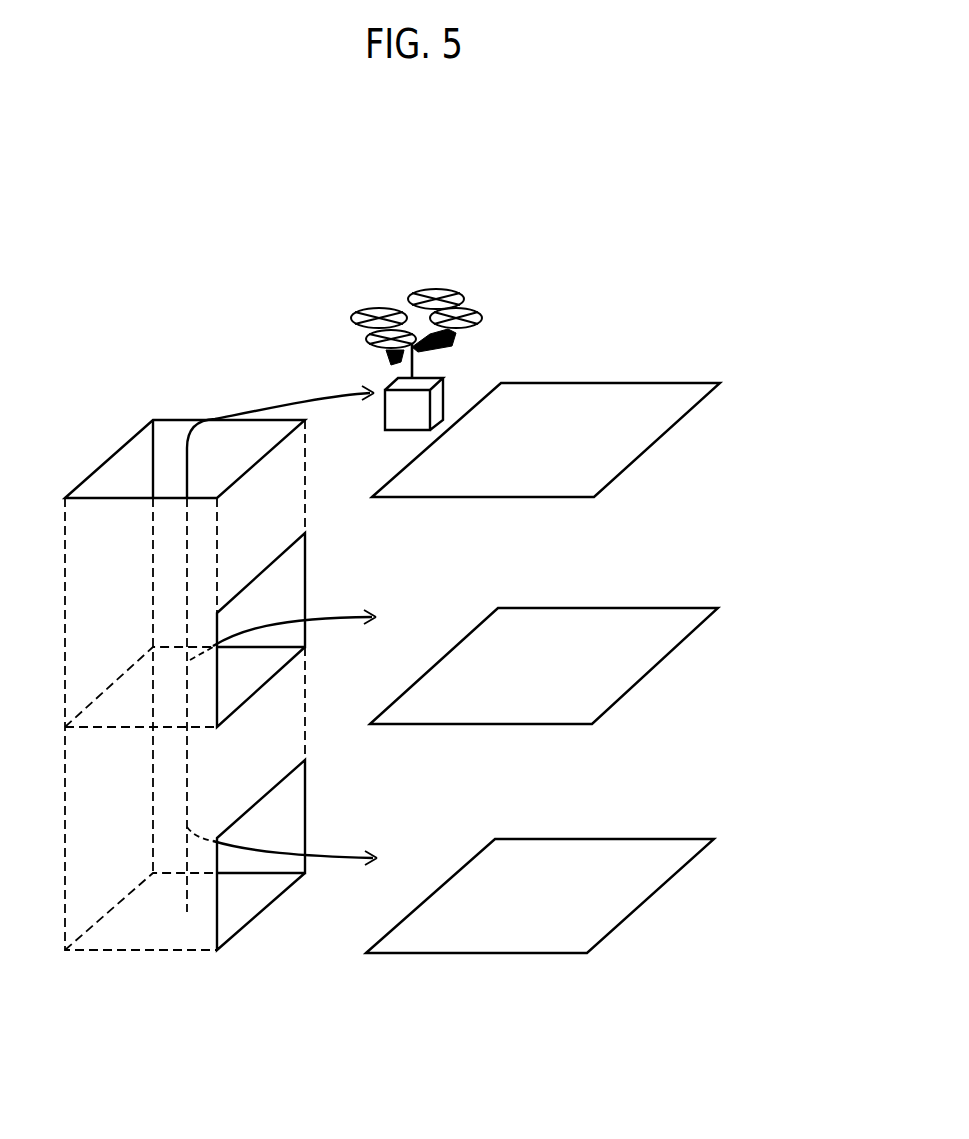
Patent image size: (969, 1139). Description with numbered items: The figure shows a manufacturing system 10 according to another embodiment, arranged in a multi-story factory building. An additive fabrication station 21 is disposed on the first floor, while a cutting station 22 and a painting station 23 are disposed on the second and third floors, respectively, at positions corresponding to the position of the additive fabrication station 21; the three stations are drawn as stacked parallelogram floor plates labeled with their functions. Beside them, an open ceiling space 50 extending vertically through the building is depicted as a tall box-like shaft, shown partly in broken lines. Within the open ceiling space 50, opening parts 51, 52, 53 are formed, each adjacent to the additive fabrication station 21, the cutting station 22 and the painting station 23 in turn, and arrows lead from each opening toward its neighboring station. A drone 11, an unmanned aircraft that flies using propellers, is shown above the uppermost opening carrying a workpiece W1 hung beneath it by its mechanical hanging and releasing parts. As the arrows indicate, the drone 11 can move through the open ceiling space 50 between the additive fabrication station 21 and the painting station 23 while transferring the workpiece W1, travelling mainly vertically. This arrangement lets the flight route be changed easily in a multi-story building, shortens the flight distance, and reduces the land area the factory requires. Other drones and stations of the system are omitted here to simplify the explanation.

The manufacturing system 10 is at (616, 294).
The drone 11 is at (427, 268).
The additive fabrication station 21 is at (683, 840).
The cutting station 22 is at (683, 609).
The painting station 23 is at (683, 383).
The open ceiling space 50 is at (91, 428).
The opening part 51 is at (305, 803).
The opening part 52 is at (305, 572).
The opening part 53 is at (173, 420).
The workpiece W1 is at (441, 394).